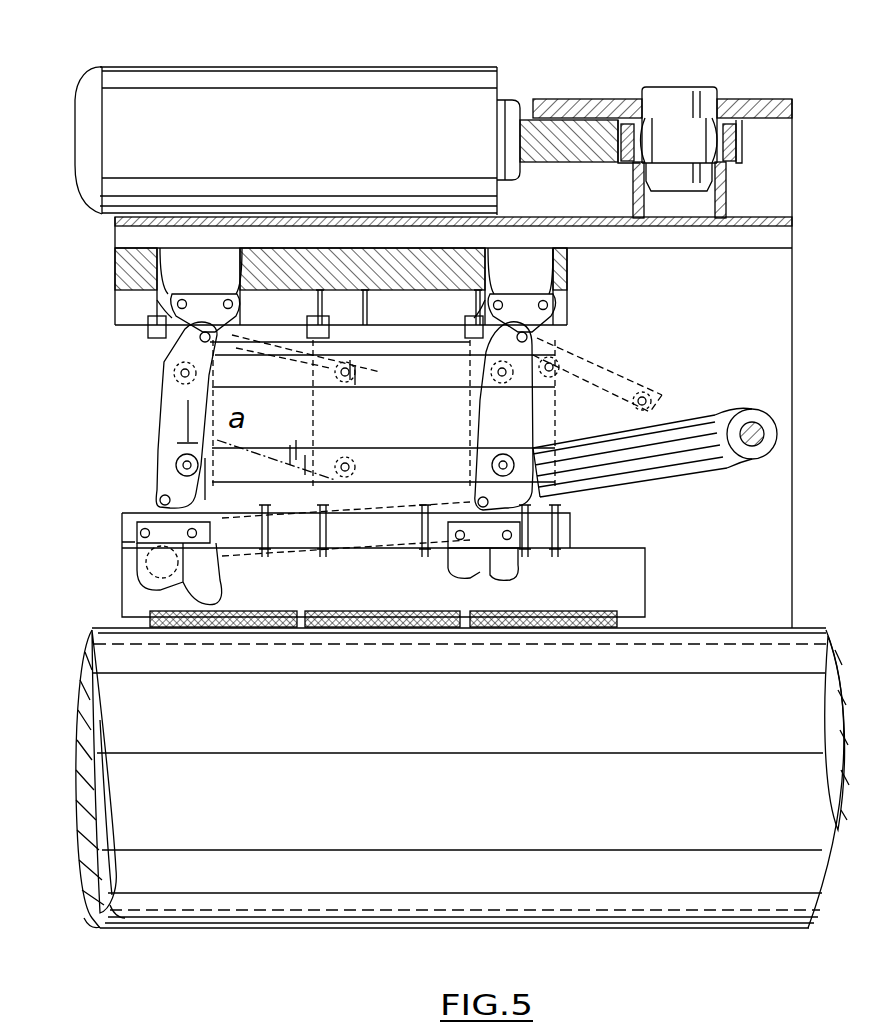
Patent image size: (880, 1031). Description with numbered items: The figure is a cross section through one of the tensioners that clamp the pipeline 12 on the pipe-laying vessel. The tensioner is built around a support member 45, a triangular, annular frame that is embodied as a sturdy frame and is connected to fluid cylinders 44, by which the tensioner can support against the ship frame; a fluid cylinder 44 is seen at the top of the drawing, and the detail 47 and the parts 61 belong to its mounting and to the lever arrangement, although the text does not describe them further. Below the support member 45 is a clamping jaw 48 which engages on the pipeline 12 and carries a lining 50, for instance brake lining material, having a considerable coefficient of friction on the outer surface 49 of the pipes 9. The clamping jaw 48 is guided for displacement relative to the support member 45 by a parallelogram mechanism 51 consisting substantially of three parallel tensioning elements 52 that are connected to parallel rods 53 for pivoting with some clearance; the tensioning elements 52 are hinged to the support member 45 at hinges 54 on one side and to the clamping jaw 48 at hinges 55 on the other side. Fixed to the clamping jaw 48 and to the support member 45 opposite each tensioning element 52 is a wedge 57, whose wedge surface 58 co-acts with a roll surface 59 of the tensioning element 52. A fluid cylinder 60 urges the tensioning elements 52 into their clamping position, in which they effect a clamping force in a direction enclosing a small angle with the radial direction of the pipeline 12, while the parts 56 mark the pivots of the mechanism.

The fluid cylinder 44 is at (413, 82).
The spherical bearing nut 47 is at (722, 96).
The support member 45 is at (114, 275).
The lever 61 is at (208, 298).
The wedge 57 is at (150, 330).
The wedge surface 58 is at (157, 308).
The hinge 54 is at (202, 340).
The tensioning element 52 is at (172, 422).
The parallel rod 53 is at (280, 432).
The roll surface 59 is at (350, 372).
The pivot bolt 56 is at (181, 374).
The hinge 55 is at (162, 500).
The parallelogram mechanism 51 is at (72, 348).
The fluid cylinder 60 is at (700, 415).
The clamping jaw 48 is at (648, 566).
The lining 50 is at (592, 611).
The pipeline 12 is at (815, 628).
The outer surface 49 is at (90, 921).
The pipe 9 is at (120, 910).